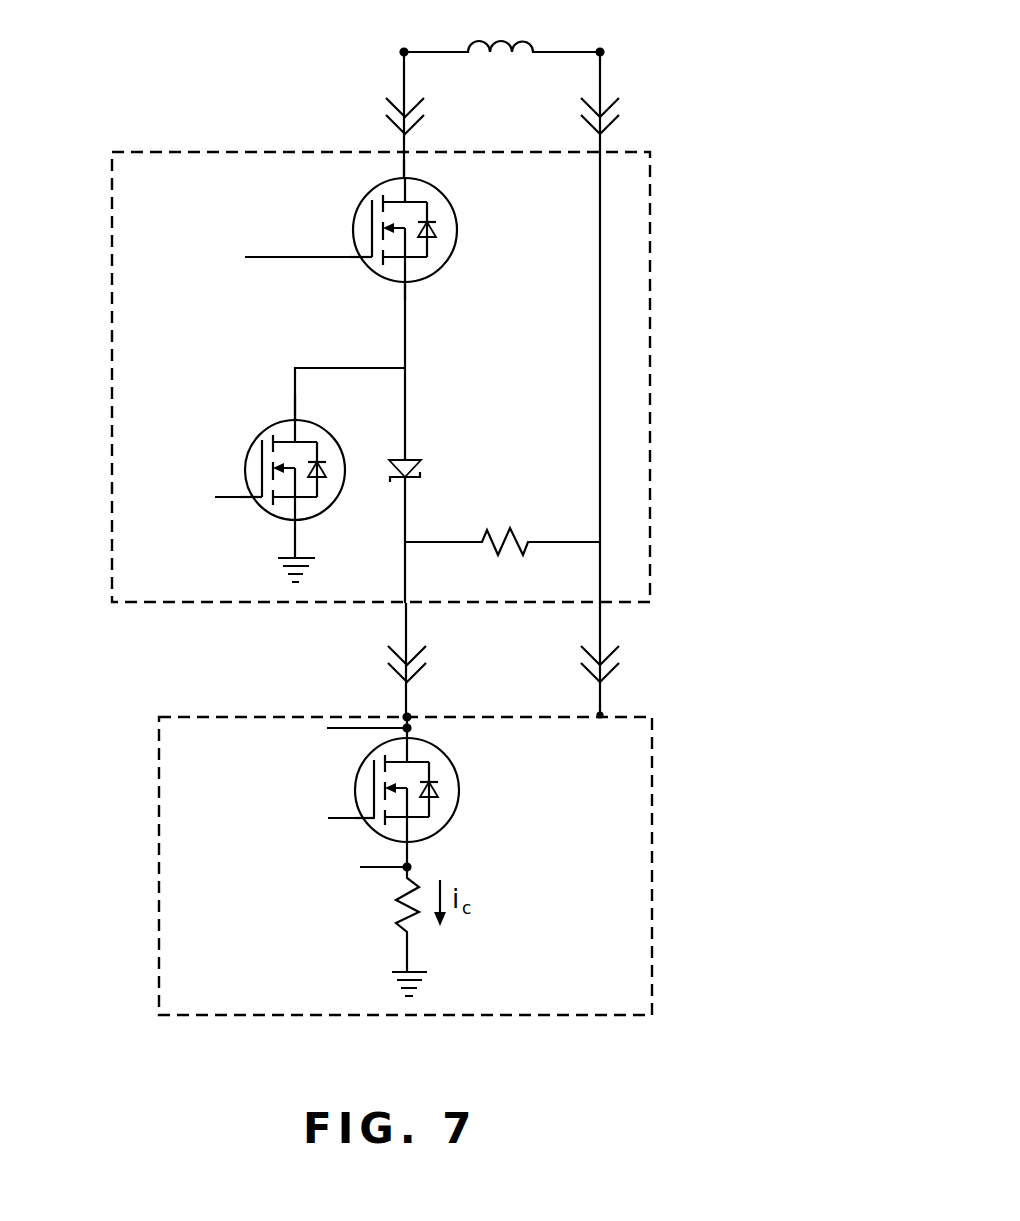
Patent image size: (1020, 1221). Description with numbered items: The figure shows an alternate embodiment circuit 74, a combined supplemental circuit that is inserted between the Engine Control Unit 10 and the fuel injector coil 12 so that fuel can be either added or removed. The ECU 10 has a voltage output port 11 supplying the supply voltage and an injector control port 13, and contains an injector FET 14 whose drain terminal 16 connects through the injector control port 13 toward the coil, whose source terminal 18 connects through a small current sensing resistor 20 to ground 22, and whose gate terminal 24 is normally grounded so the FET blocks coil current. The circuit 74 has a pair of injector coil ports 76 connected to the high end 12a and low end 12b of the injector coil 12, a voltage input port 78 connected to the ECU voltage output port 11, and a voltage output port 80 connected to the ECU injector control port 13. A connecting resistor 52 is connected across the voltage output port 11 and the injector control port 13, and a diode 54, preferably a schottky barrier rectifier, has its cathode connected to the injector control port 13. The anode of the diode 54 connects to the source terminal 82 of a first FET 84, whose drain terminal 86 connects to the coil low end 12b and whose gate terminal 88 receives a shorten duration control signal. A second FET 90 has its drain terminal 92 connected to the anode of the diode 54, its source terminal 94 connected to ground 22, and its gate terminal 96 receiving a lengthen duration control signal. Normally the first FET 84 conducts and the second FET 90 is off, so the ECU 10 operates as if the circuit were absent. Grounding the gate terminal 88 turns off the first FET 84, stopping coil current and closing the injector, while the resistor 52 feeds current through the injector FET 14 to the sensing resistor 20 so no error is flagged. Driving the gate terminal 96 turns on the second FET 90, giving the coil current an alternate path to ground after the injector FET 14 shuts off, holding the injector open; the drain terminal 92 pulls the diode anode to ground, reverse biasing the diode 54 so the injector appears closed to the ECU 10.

The Engine Control Unit (ECU) 10 is at (158, 863).
The voltage output port 11 is at (603, 713).
The fuel injector coil 12 is at (492, 75).
The high end of injector coil 12a is at (600, 52).
The low end of injector coil 12b is at (404, 52).
The injector control port 13 is at (409, 715).
The injector Field Effect Transistor (FET) 14 is at (460, 787).
The drain terminal 16 is at (404, 733).
The source terminal 18 is at (410, 845).
The current sensing resistor 20 is at (374, 905).
The ground 22 is at (322, 573).
The gate terminal 24 is at (363, 835).
The connecting resistor 52 is at (518, 508).
The diode 54 is at (431, 438).
The alternate embodiment circuit 74 is at (651, 322).
The injector coil ports 76 is at (404, 152).
The voltage input port 78 is at (602, 603).
The voltage output port 80 is at (406, 603).
The source terminal 82 is at (408, 283).
The first FET 84 is at (457, 217).
The drain terminal 86 is at (403, 173).
The gate terminal 88 is at (362, 257).
The second FET 90 is at (244, 458).
The drain terminal 92 is at (295, 420).
The source terminal 94 is at (297, 520).
The gate terminal 96 is at (258, 498).